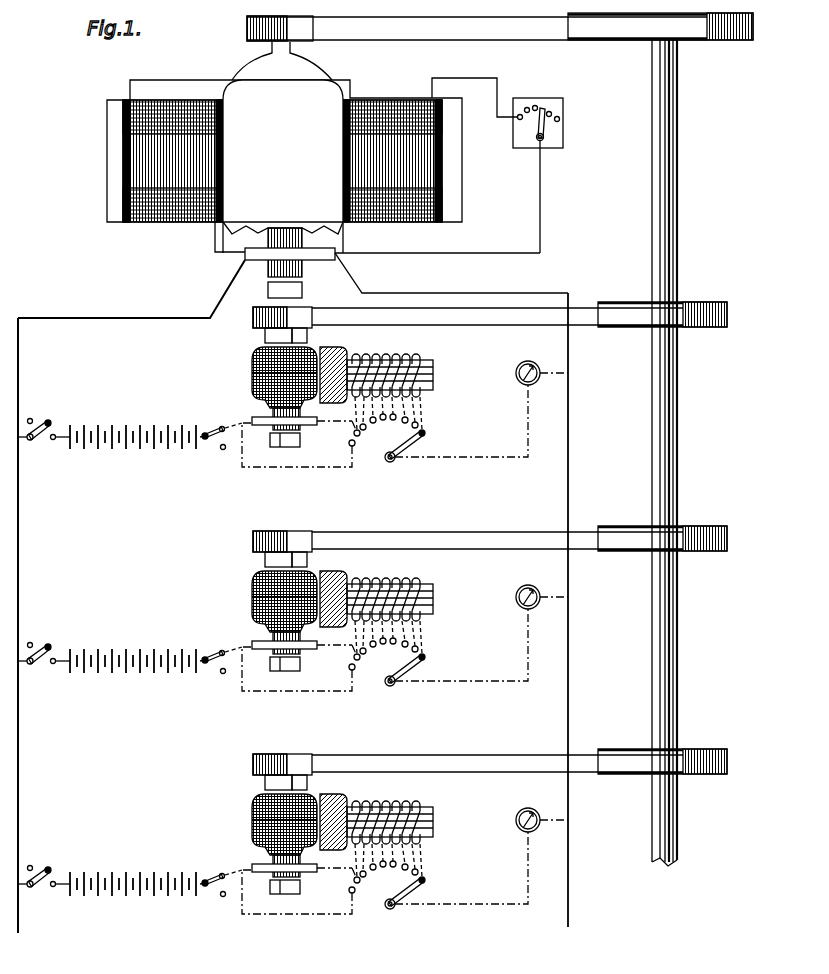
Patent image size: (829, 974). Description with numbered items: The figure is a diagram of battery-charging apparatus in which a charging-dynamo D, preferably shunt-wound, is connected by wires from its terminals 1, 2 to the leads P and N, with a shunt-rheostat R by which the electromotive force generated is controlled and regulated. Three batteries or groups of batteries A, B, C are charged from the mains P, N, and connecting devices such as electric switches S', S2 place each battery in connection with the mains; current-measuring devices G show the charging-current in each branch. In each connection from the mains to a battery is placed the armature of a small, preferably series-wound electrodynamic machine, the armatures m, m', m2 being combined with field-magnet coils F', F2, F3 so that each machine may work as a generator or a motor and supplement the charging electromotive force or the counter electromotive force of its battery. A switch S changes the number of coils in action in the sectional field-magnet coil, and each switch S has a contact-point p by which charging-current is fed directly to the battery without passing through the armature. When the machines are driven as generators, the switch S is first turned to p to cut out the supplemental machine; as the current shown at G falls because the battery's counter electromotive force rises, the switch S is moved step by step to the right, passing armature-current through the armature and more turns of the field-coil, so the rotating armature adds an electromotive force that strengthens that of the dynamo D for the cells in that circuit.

The charging-dynamo D is at (284, 170).
The dynamo terminal 1 is at (213, 245).
The dynamo terminal 2 is at (404, 254).
The shunt-rheostat R is at (563, 125).
The lead P is at (131, 596).
The lead N is at (570, 434).
The armature m is at (258, 397).
The armature m' is at (261, 621).
The armature m2 is at (256, 819).
The field-magnet coil F' is at (376, 384).
The field-magnet coil F2 is at (376, 608).
The field-magnet coil F3 is at (376, 832).
The switch S is at (414, 669).
The connecting device S' is at (44, 643).
The connecting device S2 is at (221, 648).
The contact-point p is at (355, 447).
The current-measuring device G is at (518, 607).
The battery A is at (133, 422).
The battery B is at (133, 648).
The battery C is at (133, 872).